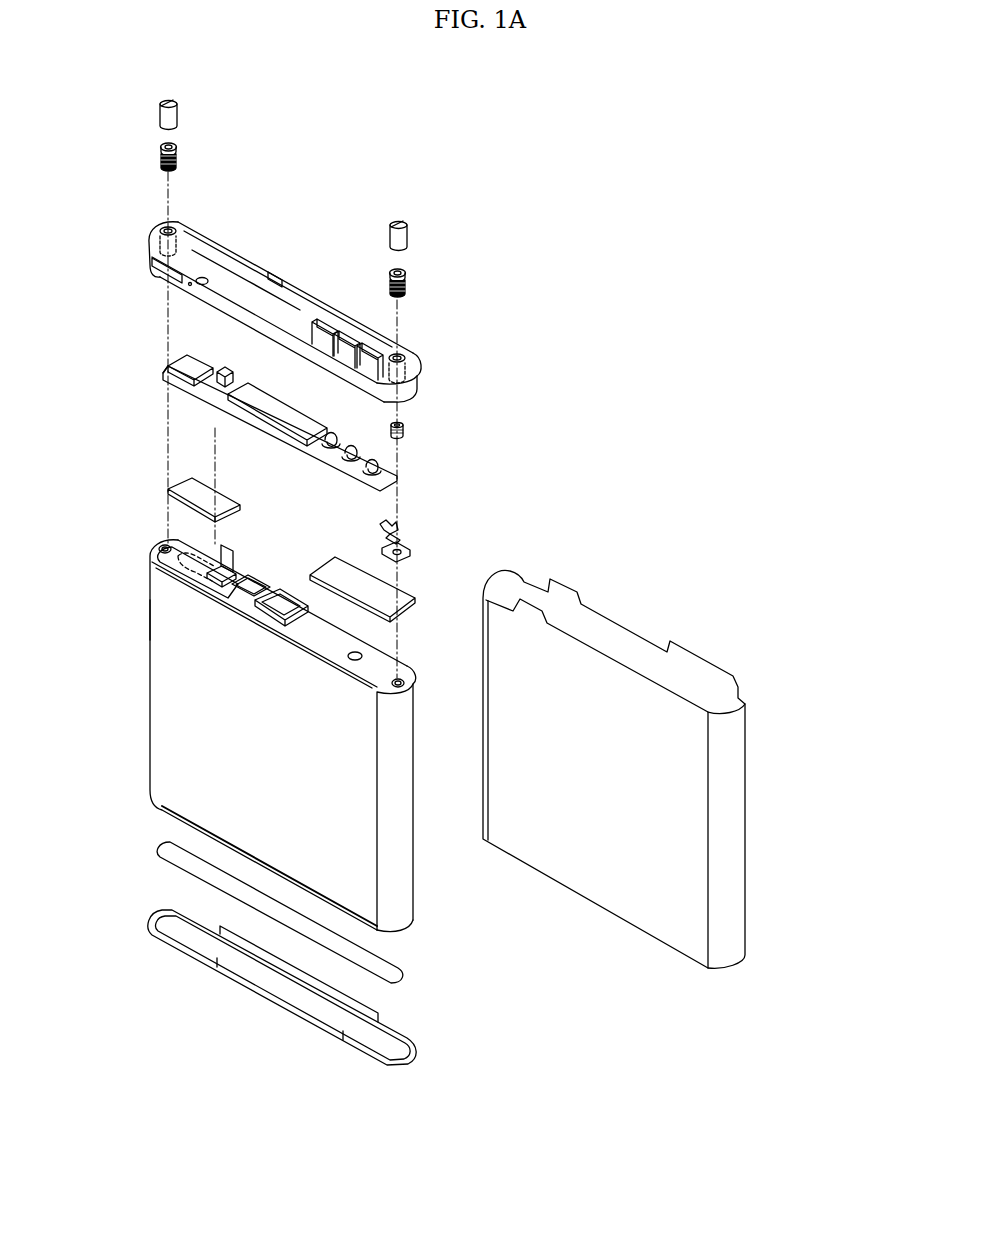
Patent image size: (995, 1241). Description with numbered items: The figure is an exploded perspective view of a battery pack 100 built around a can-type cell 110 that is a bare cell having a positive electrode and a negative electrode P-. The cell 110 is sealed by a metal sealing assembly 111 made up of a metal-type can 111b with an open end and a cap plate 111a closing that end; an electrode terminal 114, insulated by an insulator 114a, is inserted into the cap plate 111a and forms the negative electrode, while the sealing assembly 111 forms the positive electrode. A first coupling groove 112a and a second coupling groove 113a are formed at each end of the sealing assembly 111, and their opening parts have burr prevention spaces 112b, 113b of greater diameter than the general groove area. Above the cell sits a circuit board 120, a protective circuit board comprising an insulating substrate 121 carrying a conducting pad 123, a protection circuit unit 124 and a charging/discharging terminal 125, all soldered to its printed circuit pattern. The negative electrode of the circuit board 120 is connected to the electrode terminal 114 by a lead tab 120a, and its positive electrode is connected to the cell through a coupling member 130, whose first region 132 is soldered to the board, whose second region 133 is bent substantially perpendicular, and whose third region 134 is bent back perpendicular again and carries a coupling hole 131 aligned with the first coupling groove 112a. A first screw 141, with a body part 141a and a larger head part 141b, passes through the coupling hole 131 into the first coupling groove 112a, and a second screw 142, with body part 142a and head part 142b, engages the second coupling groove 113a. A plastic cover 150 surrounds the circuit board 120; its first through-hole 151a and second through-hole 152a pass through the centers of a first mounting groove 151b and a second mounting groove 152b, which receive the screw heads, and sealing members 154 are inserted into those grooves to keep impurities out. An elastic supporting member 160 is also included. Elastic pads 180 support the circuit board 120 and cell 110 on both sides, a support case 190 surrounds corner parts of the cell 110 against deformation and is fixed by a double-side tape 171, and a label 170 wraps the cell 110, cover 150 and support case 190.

The battery pack 100 is at (666, 164).
The cell 110 is at (265, 725).
The sealing assembly 111 is at (149, 593).
The cap plate 111a is at (166, 566).
The metal-type can 111b is at (163, 631).
The first coupling groove 112a is at (405, 687).
The burr prevention space 112b is at (400, 678).
The second coupling groove 113a is at (159, 552).
The burr prevention space 113b is at (164, 545).
The electrode terminal 114 is at (278, 628).
The insulator 114a is at (302, 617).
The circuit board 120 is at (304, 404).
The lead tab 120a is at (240, 571).
The insulating substrate 121 is at (398, 473).
The conducting pad 123 is at (226, 370).
The protection circuit unit 124 is at (188, 358).
The charging/discharging terminal 125 is at (382, 458).
The coupling member 130 is at (390, 539).
The coupling hole 131 is at (410, 549).
The first region 132 is at (393, 527).
The second region 133 is at (401, 539).
The third region 134 is at (410, 560).
The first screw 141 is at (366, 268).
The body part 141a is at (389, 287).
The head part 141b is at (388, 273).
The second screw 142 is at (137, 147).
The body part 142a is at (160, 163).
The head part 142b is at (159, 148).
The cover 150 is at (279, 307).
The first through-hole 151a is at (418, 367).
The first mounting groove 151b is at (412, 356).
The second through-hole 152a is at (152, 248).
The second mounting groove 152b is at (160, 232).
The sealing member 154 is at (160, 99).
The elastic supporting member 160 is at (407, 428).
The label 170 is at (630, 627).
The double-side tape 171 is at (163, 850).
The elastic pad 180 is at (168, 485).
The support case 190 is at (148, 935).
The negative electrode P- is at (255, 613).